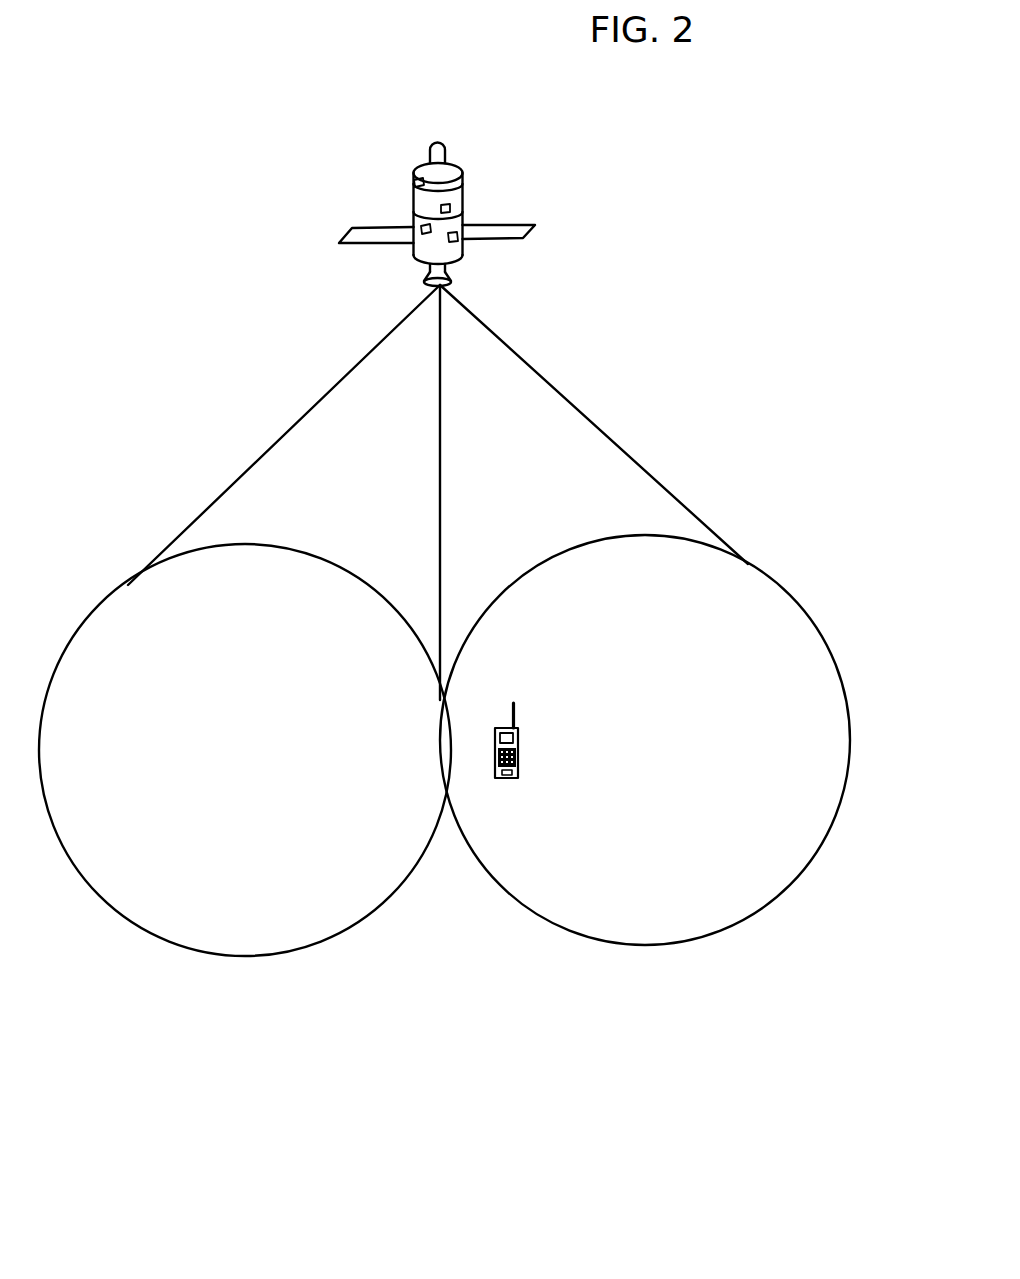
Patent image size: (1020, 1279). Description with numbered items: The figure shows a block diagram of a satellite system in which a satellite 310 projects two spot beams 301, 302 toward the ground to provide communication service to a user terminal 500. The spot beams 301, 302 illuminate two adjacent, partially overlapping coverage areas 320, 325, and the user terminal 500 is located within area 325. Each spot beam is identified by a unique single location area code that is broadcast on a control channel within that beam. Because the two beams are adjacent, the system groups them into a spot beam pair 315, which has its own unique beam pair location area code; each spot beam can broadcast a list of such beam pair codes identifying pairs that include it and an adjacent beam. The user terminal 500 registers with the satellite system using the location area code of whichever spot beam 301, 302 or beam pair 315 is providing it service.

The satellite 310 is at (413, 181).
The spot beam 301 is at (248, 469).
The spot beam 302 is at (637, 460).
The area 320 is at (258, 806).
The area 325 is at (645, 740).
The spot beam pair 315 is at (444, 837).
The user terminal 500 is at (520, 745).